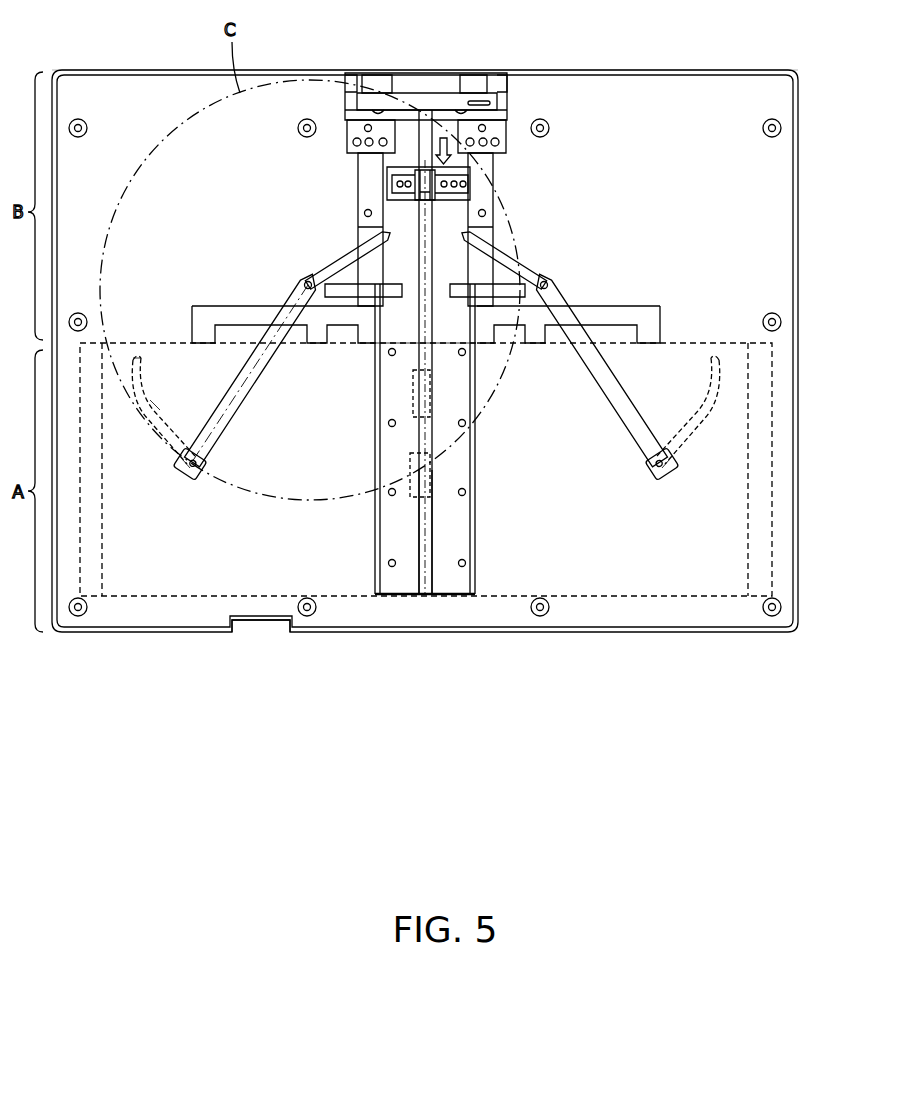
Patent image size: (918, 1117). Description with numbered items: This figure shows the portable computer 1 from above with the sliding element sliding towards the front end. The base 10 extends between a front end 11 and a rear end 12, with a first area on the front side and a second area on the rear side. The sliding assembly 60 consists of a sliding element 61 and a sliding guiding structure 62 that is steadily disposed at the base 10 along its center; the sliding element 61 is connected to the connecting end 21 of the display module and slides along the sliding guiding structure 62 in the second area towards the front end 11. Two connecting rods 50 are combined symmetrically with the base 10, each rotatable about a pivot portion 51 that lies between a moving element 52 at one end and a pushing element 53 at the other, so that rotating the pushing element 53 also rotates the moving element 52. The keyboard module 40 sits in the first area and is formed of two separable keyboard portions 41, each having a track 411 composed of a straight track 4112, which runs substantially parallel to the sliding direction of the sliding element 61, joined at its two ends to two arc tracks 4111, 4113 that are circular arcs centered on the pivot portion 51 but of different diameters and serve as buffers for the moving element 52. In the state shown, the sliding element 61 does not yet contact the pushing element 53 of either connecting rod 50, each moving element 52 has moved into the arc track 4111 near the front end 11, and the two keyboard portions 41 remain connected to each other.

The portable computer 1 is at (175, 792).
The base 10 is at (528, 622).
The front end 11 is at (253, 622).
The rear end 12 is at (643, 70).
The connecting end 21 is at (660, 577).
The keyboard module 40 is at (200, 588).
The keyboard portion 41 is at (160, 587).
The track 411 is at (145, 470).
The arc track 4111 is at (173, 457).
The straight track 4112 is at (157, 398).
The arc track 4113 is at (133, 358).
The connecting rod 50 is at (257, 393).
The pivot portion 51 is at (303, 283).
The moving element 52 is at (202, 468).
The pushing element 53 is at (335, 248).
The sliding assembly 60 is at (449, 598).
The sliding element 61 is at (457, 193).
The sliding guiding structure 62 is at (428, 595).